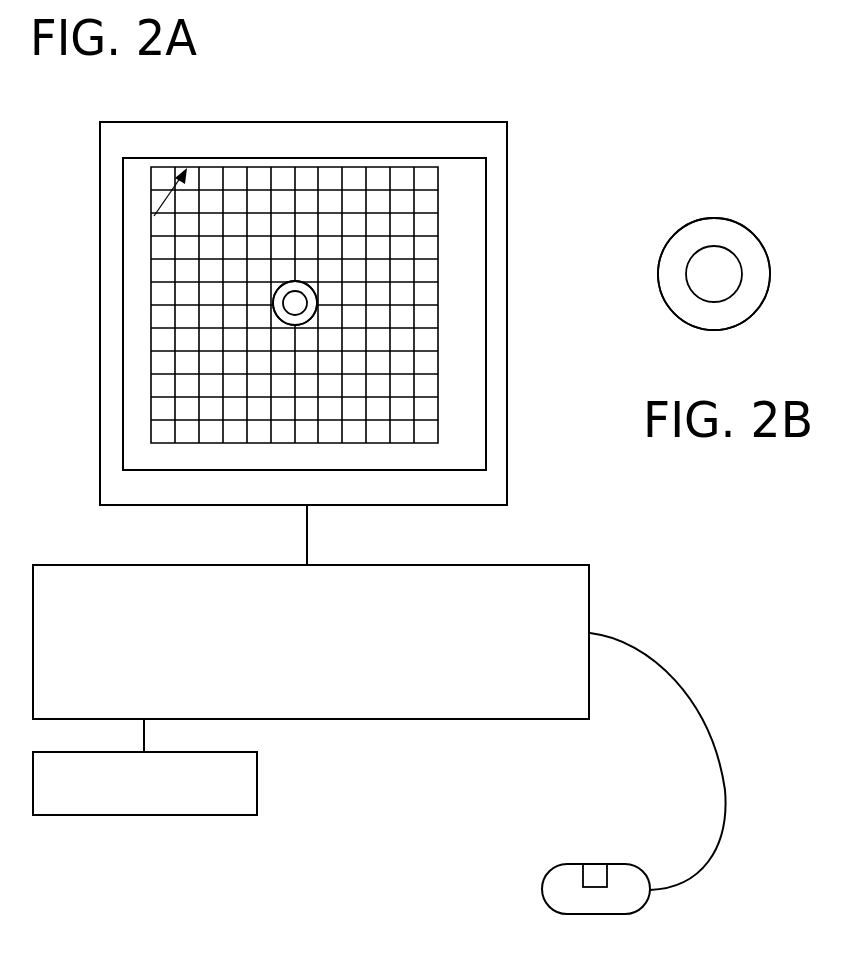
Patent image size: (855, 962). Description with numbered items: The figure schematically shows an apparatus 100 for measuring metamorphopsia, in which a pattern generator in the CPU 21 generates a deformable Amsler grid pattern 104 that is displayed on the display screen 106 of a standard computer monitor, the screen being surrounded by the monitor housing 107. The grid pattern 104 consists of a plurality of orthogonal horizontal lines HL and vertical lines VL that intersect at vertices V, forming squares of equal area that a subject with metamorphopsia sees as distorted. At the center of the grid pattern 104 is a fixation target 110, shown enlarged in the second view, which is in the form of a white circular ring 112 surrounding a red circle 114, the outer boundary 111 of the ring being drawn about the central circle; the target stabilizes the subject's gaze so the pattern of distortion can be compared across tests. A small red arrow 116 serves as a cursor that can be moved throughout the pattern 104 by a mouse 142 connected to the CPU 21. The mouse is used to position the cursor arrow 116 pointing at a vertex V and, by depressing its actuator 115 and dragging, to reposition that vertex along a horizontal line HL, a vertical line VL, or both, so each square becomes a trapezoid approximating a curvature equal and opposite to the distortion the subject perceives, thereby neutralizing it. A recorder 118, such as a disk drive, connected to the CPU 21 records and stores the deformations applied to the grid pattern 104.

In FIG. 2A, the apparatus for measuring metamorphopsia 100 is at (624, 112).
In FIG. 2A, the deformable Amsler grid pattern 104 is at (449, 182).
In FIG. 2A, the display screen 106 is at (487, 445).
In FIG. 2A, the outer frame (housing) 107 is at (508, 492).
In FIG. 2A, the fixation target 110 is at (301, 323).
In FIG. 2B, the fixation target 110 is at (714, 261).
In FIG. 2B, the outer circle of cursor 111 is at (673, 230).
In FIG. 2A, the white circular ring 112 is at (276, 299).
In FIG. 2B, the white circular ring 112 is at (733, 310).
In FIG. 2A, the red circle 114 is at (296, 304).
In FIG. 2B, the red circle 114 is at (710, 273).
In FIG. 2A, the cursor arrow 116 is at (156, 210).
In FIG. 2A, the vertical line VL is at (296, 210).
In FIG. 2A, the vertex V is at (308, 205).
In FIG. 2A, the horizontal line HL is at (426, 258).
In FIG. 2A, the CPU 21 is at (589, 598).
In FIG. 2A, the recorder 118 is at (257, 783).
In FIG. 2A, the mouse 142 is at (547, 861).
In FIG. 2A, the actuator 115 is at (593, 862).